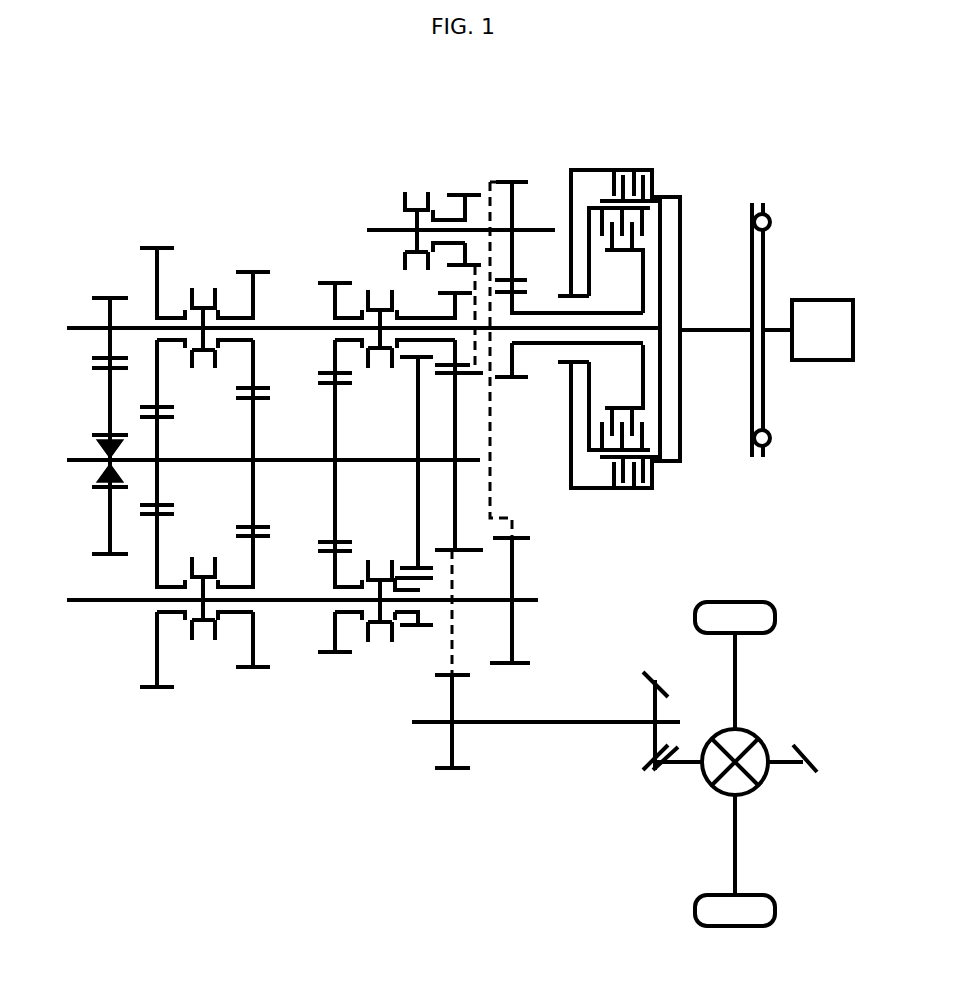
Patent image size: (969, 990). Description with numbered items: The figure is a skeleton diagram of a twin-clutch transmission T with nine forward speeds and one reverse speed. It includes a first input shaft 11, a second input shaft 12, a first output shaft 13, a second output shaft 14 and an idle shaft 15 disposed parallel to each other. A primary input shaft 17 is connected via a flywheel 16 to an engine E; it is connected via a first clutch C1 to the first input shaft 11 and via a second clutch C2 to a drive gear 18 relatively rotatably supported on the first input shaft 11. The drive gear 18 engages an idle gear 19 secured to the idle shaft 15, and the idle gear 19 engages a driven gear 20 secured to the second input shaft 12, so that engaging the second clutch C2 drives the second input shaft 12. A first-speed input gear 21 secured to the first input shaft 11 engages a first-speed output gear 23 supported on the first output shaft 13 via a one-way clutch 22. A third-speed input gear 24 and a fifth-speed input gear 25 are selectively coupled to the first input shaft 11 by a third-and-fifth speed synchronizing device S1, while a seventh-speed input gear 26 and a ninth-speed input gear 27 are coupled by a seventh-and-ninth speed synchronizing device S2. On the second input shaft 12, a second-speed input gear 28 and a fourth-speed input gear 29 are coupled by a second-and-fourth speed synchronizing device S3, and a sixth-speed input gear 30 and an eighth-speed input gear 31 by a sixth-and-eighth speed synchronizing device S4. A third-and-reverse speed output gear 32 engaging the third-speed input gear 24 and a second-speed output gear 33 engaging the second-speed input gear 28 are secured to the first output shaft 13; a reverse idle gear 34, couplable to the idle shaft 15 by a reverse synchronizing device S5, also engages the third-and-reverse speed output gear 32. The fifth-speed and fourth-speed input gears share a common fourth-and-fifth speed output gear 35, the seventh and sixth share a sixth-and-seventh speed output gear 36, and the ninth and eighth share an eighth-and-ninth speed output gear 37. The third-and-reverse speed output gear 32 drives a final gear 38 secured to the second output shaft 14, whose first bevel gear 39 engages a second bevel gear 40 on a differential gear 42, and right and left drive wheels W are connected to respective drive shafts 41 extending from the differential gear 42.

The twin-clutch transmission T is at (303, 222).
The first input shaft 11 is at (293, 326).
The second input shaft 12 is at (293, 598).
The first output shaft 13 is at (293, 458).
The second output shaft 14 is at (560, 720).
The idle shaft 15 is at (373, 228).
The flywheel 16 is at (756, 200).
The primary input shaft 17 is at (713, 328).
The drive gear 18 is at (522, 292).
The idle gear 19 is at (516, 180).
The driven gear 20 is at (514, 536).
The first-speed input gear 21 is at (111, 296).
The one-way clutch 22 is at (96, 448).
The first-speed output gear 23 is at (92, 364).
The third-speed input gear 24 is at (448, 292).
The fifth-speed input gear 25 is at (334, 281).
The seventh-speed input gear 26 is at (253, 270).
The ninth-speed input gear 27 is at (157, 246).
The second-speed input gear 28 is at (417, 628).
The fourth-speed input gear 29 is at (334, 655).
The sixth-speed input gear 30 is at (252, 670).
The eighth-speed input gear 31 is at (156, 690).
The third-and-reverse speed output gear 32 is at (467, 377).
The second-speed output gear 33 is at (410, 362).
The reverse idle gear 34 is at (462, 193).
The fourth-and-fifth speed output gear 35 is at (340, 386).
The sixth-and-seventh speed output gear 36 is at (259, 392).
The eighth-and-ninth speed output gear 37 is at (168, 412).
The final gear 38 is at (456, 673).
The first bevel gear 39 is at (650, 672).
The second bevel gear 40 is at (676, 748).
The drive shafts 41 is at (742, 661).
The differential gear 42 is at (760, 735).
The third-and-fifth speed synchronizing device S1 is at (380, 300).
The seventh-and-ninth speed synchronizing device S2 is at (203, 298).
The second-and-fourth speed synchronizing device S3 is at (380, 570).
The sixth-and-eighth speed synchronizing device S4 is at (203, 568).
The reverse synchronizing device S5 is at (417, 192).
The first clutch C1 is at (660, 180).
The second clutch C2 is at (648, 237).
The engine E is at (830, 343).
The drive wheels W is at (735, 601).